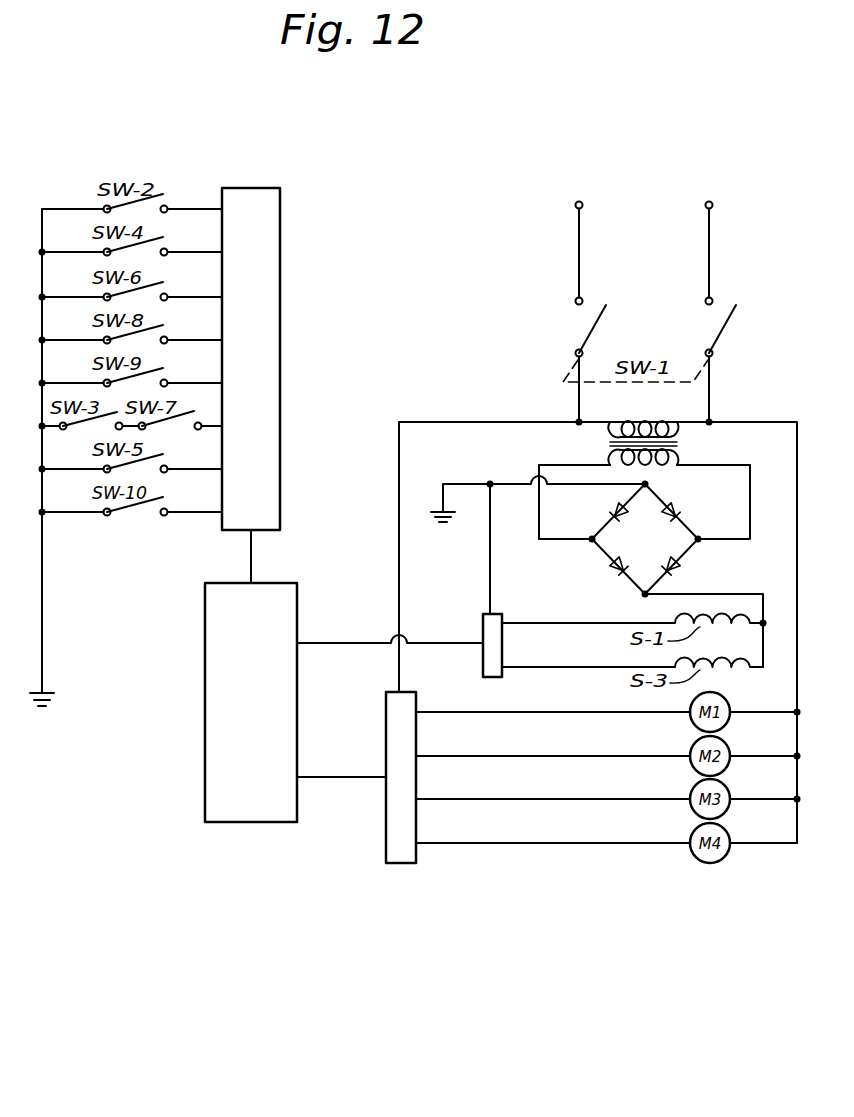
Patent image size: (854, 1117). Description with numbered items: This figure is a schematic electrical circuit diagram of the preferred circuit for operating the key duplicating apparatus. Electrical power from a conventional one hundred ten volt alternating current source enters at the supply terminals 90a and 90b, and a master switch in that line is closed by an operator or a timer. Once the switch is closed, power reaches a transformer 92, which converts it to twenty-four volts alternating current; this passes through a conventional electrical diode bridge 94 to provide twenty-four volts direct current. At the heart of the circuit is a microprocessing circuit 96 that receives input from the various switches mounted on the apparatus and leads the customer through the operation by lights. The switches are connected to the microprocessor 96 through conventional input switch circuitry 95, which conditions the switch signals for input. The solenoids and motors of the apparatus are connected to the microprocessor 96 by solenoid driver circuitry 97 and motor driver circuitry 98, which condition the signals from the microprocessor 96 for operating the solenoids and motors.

The supply terminal 90a is at (582, 297).
The supply terminal 90b is at (716, 297).
The transformer 92 is at (608, 443).
The electrical diode bridge 94 is at (688, 527).
The input switch circuitry 95 is at (265, 367).
The microprocessing circuit 96 is at (264, 712).
The solenoid driver circuitry 97 is at (483, 622).
The motor driver circuitry 98 is at (386, 721).